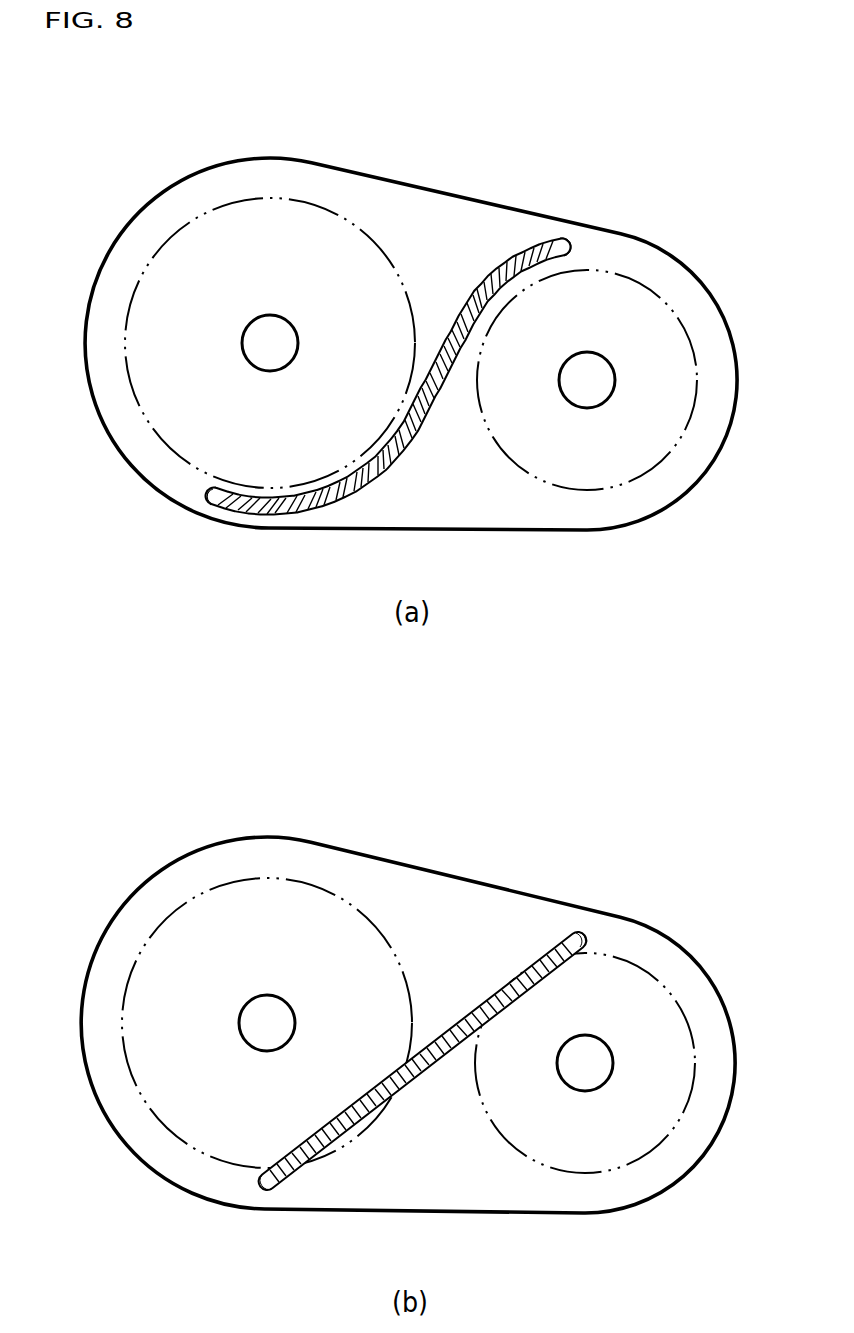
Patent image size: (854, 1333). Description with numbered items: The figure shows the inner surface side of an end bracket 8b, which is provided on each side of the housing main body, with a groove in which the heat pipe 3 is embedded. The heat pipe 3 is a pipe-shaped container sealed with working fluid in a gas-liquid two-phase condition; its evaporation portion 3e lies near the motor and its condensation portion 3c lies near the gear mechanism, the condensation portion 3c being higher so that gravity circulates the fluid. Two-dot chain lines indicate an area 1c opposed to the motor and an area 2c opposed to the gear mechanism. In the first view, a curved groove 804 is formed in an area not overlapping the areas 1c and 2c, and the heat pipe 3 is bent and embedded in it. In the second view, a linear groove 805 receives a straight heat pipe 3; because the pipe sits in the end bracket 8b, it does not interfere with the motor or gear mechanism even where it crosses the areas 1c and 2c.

The area opposed to the motor 1c is at (182, 228).
The area opposed to the gear mechanism 2c is at (645, 284).
The heat pipe 3 is at (422, 428).
The condensation portion 3c is at (552, 242).
The evaporation portion 3e is at (243, 508).
The end bracket 8b is at (441, 192).
The curved groove 804 is at (212, 503).
The linear groove 805 is at (577, 940).